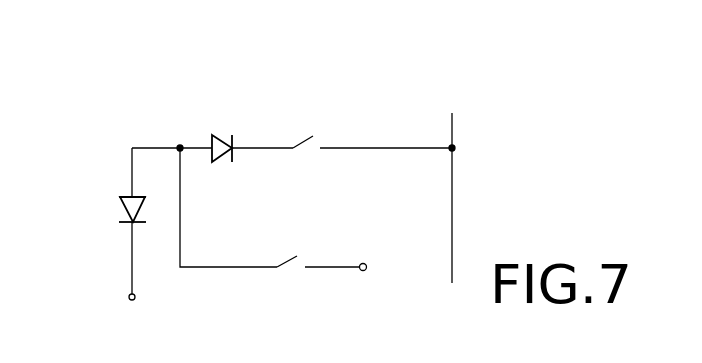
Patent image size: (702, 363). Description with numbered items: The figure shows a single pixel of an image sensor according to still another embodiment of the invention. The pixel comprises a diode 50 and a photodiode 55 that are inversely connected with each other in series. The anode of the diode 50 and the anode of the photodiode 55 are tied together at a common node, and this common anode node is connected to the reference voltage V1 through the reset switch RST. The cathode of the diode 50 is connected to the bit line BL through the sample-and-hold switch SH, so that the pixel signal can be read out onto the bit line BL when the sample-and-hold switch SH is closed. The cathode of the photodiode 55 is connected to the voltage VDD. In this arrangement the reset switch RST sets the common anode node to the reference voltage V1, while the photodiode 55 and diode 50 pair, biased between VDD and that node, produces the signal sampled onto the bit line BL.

The diode 50 is at (231, 128).
The photodiode 55 is at (118, 203).
The sample-and-hold switch SH is at (372, 124).
The reset switch RST is at (318, 244).
The bit line BL is at (478, 198).
The reference voltage V1 is at (377, 280).
The voltage VDD is at (136, 314).